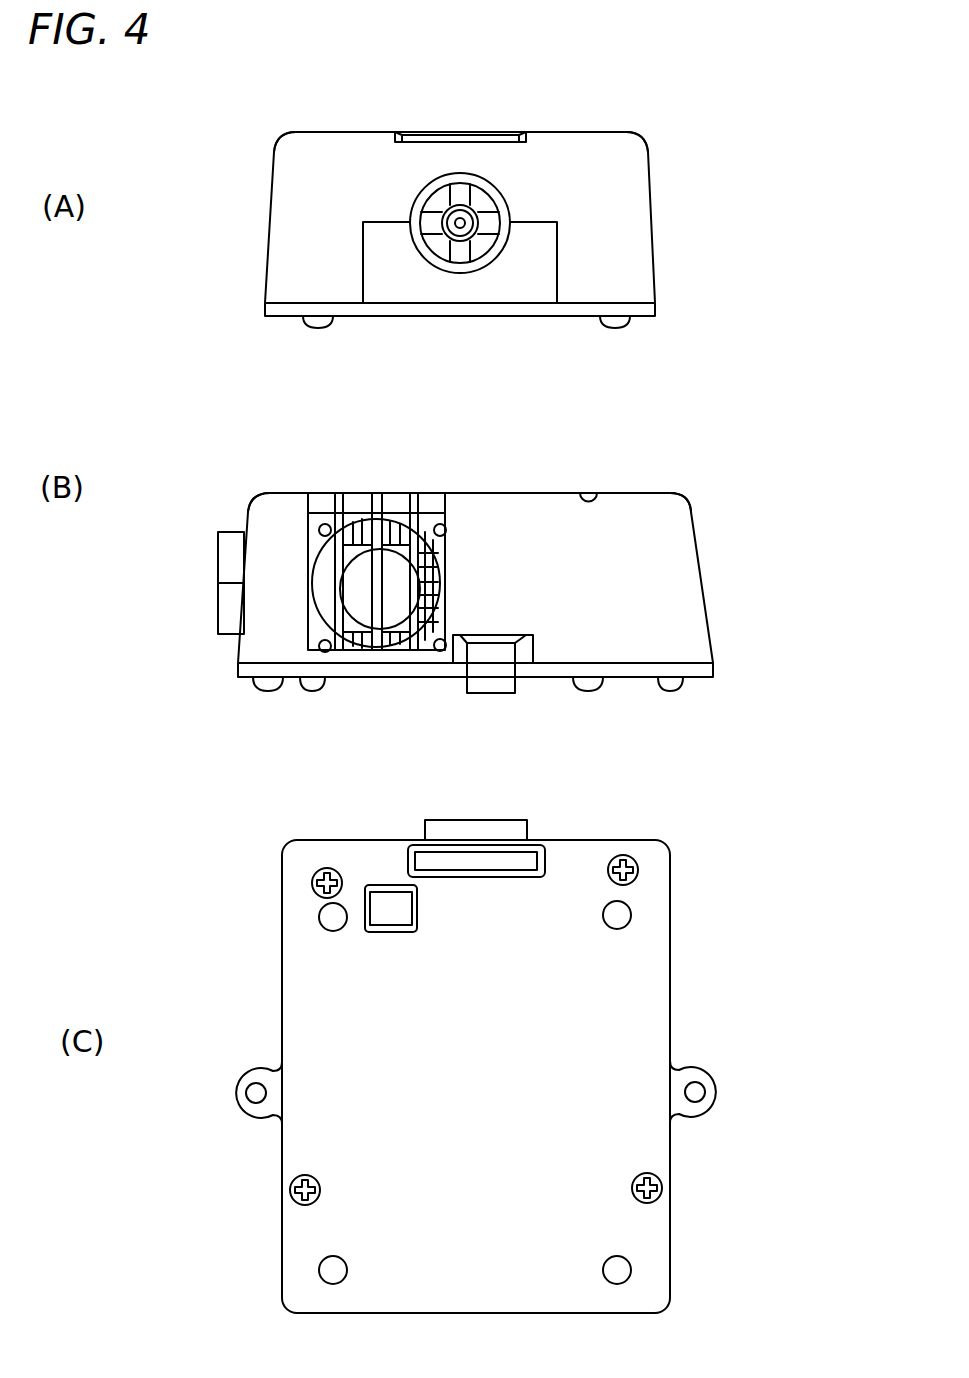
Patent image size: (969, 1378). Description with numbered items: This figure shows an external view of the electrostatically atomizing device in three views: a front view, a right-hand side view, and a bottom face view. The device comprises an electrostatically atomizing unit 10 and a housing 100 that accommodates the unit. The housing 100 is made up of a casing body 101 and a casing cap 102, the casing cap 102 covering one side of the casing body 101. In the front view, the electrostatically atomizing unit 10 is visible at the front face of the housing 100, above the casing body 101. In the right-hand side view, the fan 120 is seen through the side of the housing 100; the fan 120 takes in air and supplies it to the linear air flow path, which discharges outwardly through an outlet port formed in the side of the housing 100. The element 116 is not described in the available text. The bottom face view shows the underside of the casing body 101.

The housing 100 is at (634, 134).
The casing body 101 is at (442, 317).
The casing cap 102 is at (307, 131).
The electrostatically atomizing unit 10 is at (460, 176).
The cooling fan 116 is at (403, 563).
The fan 120 is at (343, 532).